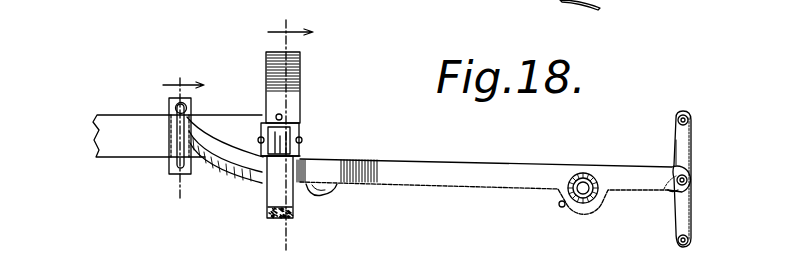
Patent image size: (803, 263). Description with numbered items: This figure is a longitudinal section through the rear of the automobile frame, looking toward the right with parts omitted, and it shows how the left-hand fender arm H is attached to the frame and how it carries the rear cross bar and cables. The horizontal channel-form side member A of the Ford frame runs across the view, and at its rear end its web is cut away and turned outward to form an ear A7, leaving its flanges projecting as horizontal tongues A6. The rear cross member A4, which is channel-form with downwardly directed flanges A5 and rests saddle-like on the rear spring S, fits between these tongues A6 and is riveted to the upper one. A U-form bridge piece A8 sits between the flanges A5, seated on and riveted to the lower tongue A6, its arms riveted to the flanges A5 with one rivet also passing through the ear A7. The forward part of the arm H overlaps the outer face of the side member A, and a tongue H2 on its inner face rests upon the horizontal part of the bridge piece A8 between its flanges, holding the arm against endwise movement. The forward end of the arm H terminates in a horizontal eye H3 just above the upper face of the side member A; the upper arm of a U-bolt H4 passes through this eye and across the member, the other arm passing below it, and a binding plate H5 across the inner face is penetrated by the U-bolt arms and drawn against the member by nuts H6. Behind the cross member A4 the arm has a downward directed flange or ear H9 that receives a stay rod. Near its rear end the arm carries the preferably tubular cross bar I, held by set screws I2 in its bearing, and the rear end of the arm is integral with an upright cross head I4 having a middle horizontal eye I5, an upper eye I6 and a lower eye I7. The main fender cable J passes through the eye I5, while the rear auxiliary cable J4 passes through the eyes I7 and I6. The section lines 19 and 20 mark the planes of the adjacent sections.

The side member A is at (112, 135).
The arm H is at (458, 178).
The tongue H2 is at (300, 130).
The horizontal eye H3 is at (176, 107).
The U-bolt H4 is at (172, 150).
The binding plate H5 is at (167, 171).
The nuts H6 is at (168, 258).
The downward directed flange or ear H9 is at (318, 187).
The rear cross member A4 is at (294, 73).
The flanges A5 is at (265, 153).
The horizontal tongues A6 is at (284, 116).
The ear A7 is at (261, 132).
The U-form bridge piece A8 is at (300, 148).
The rear spring S is at (296, 218).
The section line 19 is at (183, 138).
The section line 20 is at (290, 131).
The cross bar I is at (590, 173).
The set screws I2 is at (561, 207).
The upright cross head I4 is at (686, 151).
The horizontal transverse aperture or eye I5 is at (689, 181).
The aperture or eye I6 is at (688, 119).
The aperture or eye I7 is at (690, 241).
The main fender cable J is at (668, 186).
The auxiliary cable J4 is at (683, 120).